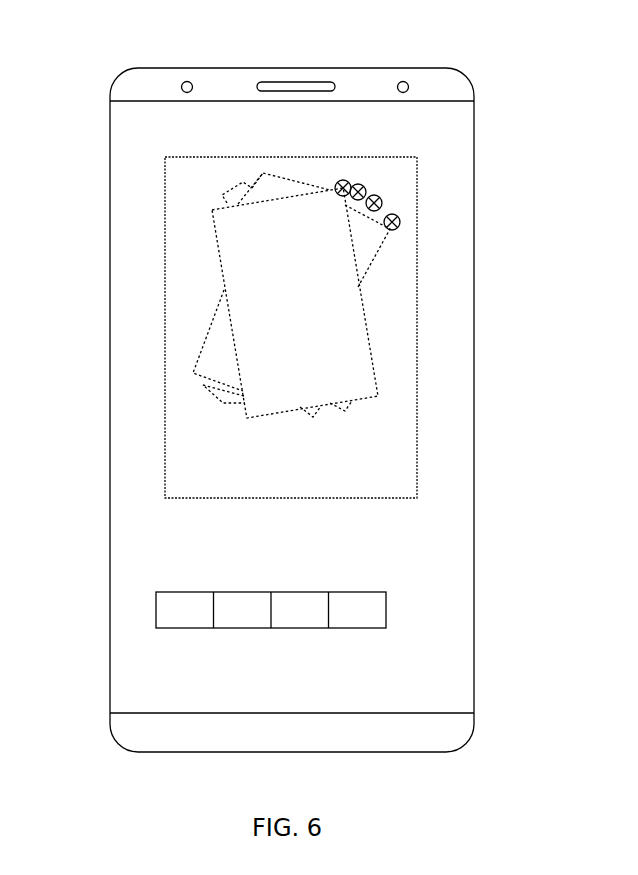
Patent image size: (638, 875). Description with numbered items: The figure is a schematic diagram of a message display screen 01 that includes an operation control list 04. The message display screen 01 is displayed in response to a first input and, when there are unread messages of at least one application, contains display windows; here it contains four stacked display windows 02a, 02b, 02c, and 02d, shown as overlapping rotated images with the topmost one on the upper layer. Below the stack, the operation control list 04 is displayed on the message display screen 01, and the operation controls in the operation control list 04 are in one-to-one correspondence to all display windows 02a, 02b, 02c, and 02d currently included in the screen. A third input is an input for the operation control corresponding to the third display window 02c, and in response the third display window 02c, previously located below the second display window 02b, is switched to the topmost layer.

The message display screen 01 is at (403, 358).
The operation control list 04 is at (378, 612).
The display window 02a is at (228, 196).
The second display window 02b is at (237, 268).
The third display window 02c is at (273, 193).
The display window 02d is at (247, 194).